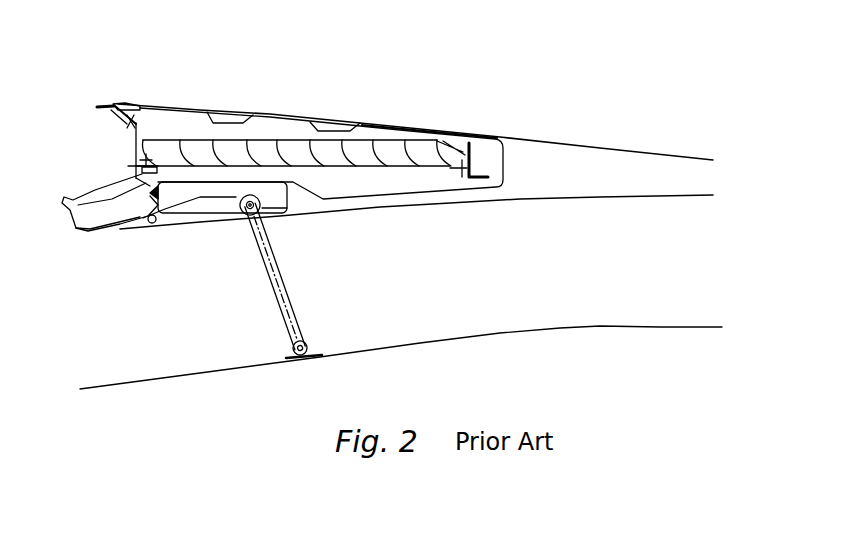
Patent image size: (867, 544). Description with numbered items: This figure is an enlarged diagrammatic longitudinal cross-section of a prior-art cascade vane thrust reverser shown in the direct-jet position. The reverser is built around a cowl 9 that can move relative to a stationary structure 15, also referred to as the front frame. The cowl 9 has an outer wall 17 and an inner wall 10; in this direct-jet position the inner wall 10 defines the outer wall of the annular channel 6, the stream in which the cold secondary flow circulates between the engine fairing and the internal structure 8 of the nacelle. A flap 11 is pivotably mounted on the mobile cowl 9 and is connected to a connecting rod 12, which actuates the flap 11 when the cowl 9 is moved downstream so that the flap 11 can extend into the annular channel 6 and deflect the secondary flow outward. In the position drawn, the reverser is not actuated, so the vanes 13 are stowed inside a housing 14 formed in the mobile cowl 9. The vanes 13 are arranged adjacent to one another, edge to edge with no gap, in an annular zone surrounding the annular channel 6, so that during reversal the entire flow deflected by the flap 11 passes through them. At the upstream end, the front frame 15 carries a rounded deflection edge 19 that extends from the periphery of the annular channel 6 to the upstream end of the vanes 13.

The annular channel 6 is at (480, 284).
The internal structure 8 is at (180, 374).
The cowl 9 is at (573, 165).
The inner wall 10 is at (571, 199).
The flap 11 is at (195, 218).
The connecting rod 12 is at (294, 302).
The vanes 13 is at (295, 152).
The housing 14 is at (365, 178).
The stationary structure 15 is at (101, 120).
The outer wall 17 is at (412, 133).
The rounded deflection edge 19 is at (83, 229).